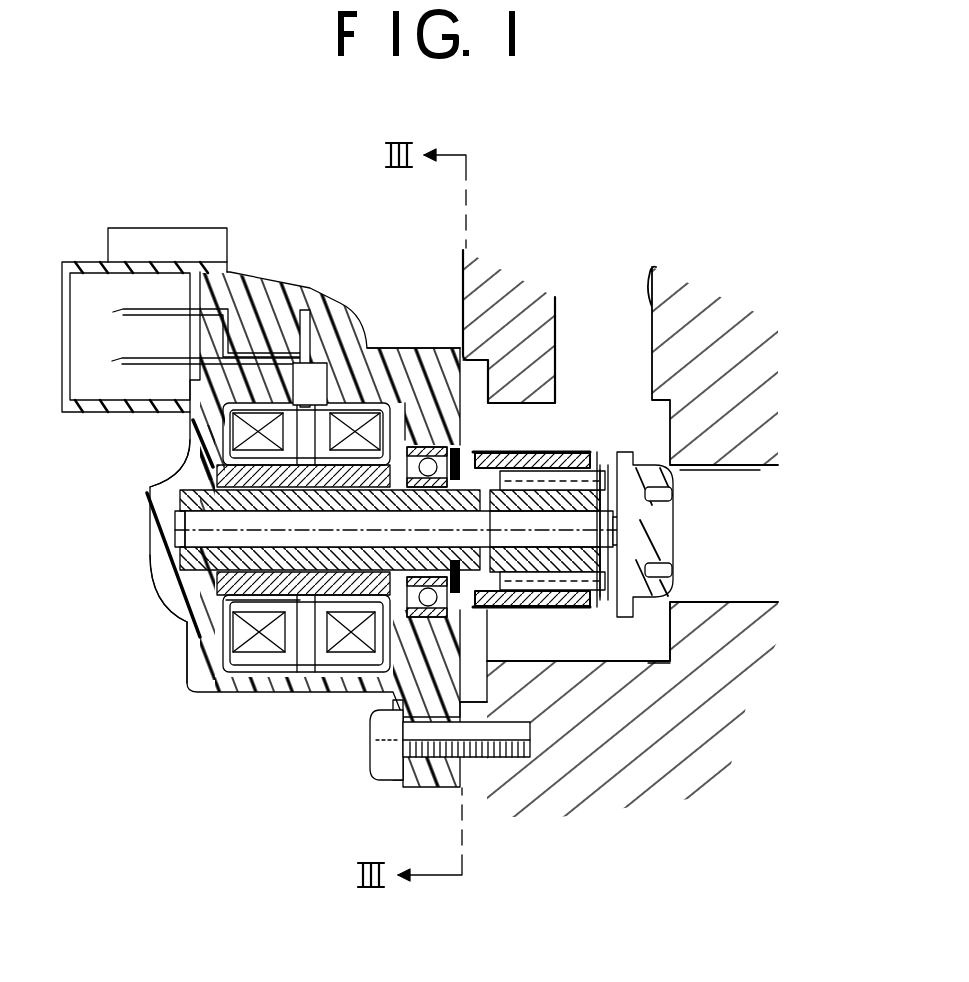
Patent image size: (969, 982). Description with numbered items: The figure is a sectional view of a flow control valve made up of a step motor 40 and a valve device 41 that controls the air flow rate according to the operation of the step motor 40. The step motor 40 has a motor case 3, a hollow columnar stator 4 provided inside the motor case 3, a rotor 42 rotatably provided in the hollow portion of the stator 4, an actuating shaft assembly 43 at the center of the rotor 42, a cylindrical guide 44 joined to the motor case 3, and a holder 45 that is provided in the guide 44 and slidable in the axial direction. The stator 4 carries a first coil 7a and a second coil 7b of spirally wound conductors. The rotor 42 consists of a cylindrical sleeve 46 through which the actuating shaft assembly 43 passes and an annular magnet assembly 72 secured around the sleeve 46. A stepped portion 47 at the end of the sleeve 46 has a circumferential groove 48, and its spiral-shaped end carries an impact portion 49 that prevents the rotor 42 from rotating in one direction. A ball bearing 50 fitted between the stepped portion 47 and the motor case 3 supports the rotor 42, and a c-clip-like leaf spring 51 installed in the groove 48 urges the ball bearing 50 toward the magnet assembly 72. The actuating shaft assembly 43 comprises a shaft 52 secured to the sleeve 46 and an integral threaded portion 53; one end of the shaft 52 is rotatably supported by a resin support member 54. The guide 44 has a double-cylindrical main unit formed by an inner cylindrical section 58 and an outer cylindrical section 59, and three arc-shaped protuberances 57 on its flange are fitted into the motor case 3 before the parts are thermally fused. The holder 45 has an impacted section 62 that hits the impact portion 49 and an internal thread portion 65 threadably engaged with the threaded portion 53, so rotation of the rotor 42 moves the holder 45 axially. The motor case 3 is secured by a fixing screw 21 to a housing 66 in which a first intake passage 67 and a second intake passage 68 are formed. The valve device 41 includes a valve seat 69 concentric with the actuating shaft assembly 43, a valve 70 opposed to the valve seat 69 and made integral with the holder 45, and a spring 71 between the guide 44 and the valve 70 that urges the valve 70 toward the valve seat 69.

The motor case 3 is at (207, 667).
The stator 4 is at (247, 690).
The first coil 7a is at (260, 652).
The second coil 7b is at (350, 410).
The fixing screw 21 is at (365, 745).
The step motor 40 is at (177, 620).
The valve device 41 is at (600, 447).
The rotor 42 is at (200, 485).
The actuating shaft assembly 43 is at (185, 565).
The guide 44 is at (600, 620).
The holder 45 is at (528, 400).
The sleeve 46 is at (200, 557).
The stepped portion 47 is at (369, 348).
The groove 48 is at (400, 348).
The impact portion 49 is at (470, 360).
The ball bearing 50 is at (418, 720).
The leaf spring 51 is at (467, 750).
The shaft 52 is at (200, 522).
The threaded portion 53 is at (615, 600).
The support member 54 is at (193, 640).
The protuberances 57 is at (420, 445).
The inner cylindrical section 58 is at (572, 452).
The outer cylindrical section 59 is at (540, 615).
The impacted section 62 is at (507, 615).
The internal thread portion 65 is at (637, 450).
The housing 66 is at (775, 400).
The first intake passage 67 is at (655, 270).
The second intake passage 68 is at (745, 492).
The valve seat 69 is at (697, 617).
The valve 70 is at (640, 655).
The spring 71 is at (498, 450).
The magnet assembly 72 is at (195, 448).